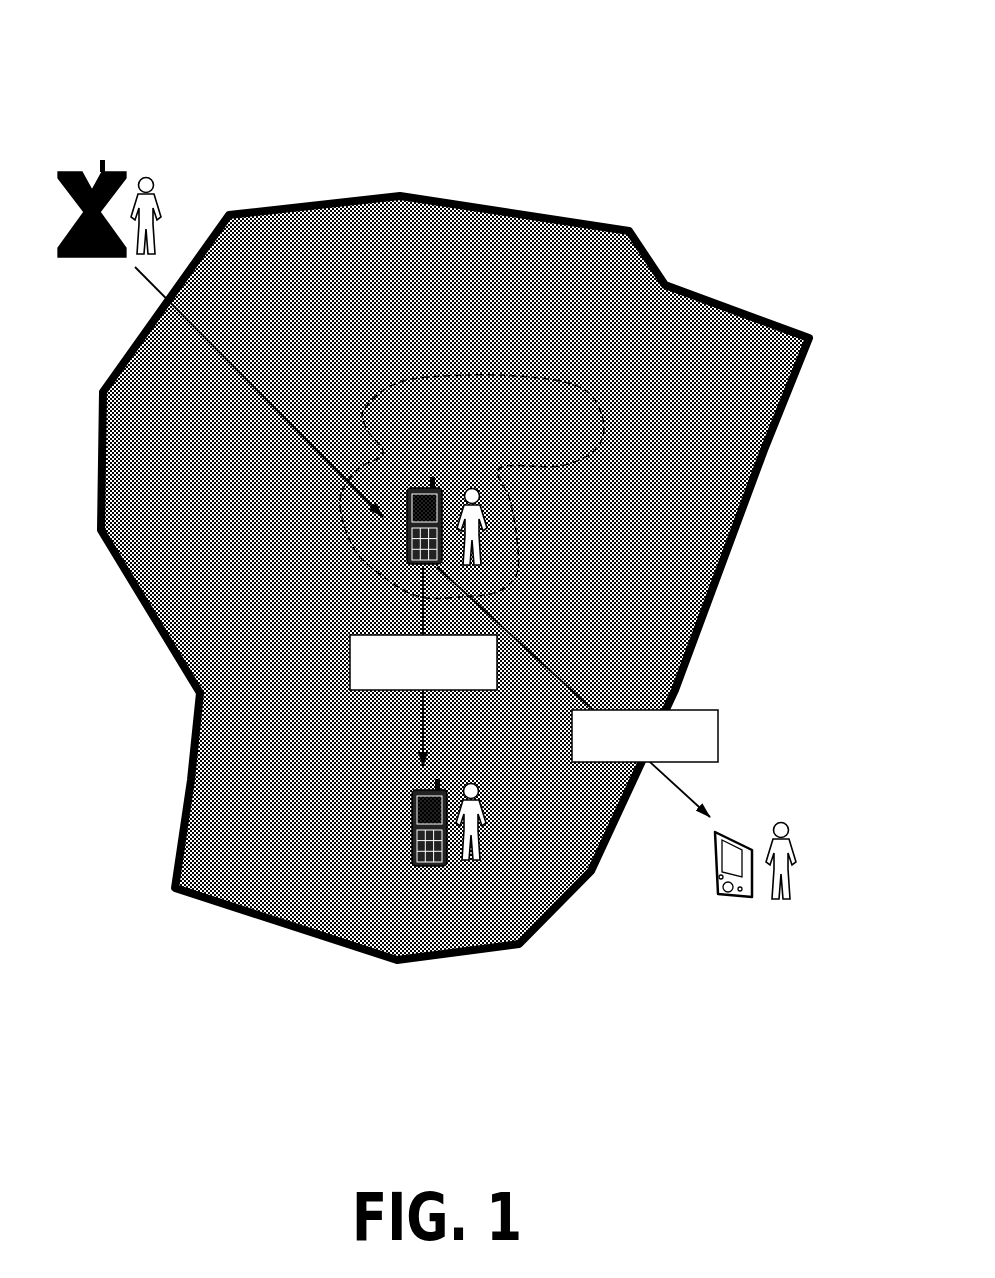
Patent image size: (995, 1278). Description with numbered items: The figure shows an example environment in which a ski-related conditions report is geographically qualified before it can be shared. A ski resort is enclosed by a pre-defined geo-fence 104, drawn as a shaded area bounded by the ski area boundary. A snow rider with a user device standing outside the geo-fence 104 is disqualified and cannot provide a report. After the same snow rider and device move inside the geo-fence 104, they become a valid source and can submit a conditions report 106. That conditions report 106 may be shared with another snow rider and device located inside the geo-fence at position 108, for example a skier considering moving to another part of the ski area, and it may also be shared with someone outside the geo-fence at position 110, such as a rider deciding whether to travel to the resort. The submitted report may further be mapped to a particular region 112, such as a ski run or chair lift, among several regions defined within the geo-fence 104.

The pre-defined geo-fence 104 is at (401, 192).
The conditions report 106 is at (534, 692).
The position within geo-fence 108 is at (458, 767).
The position outside geo-fence 110 is at (742, 813).
The region 112 is at (498, 378).